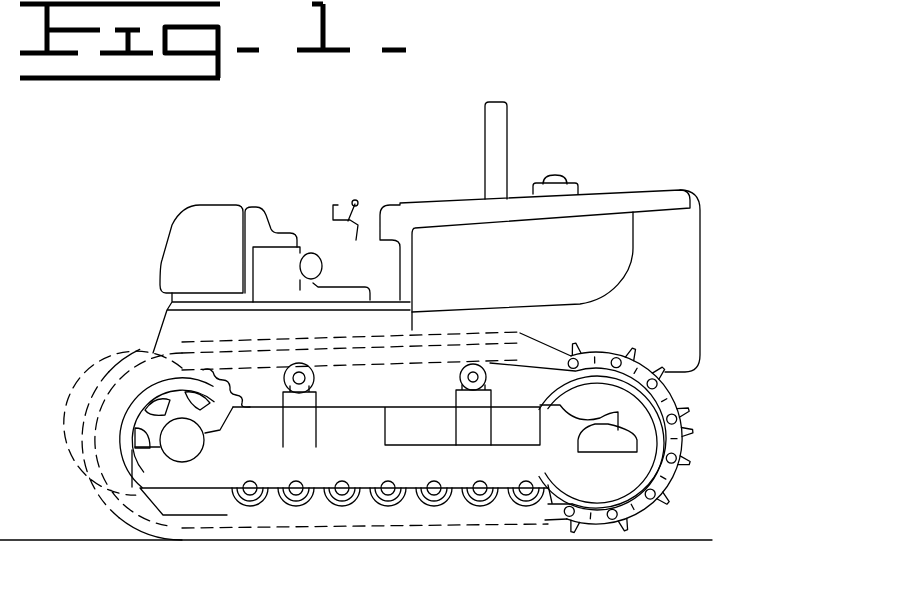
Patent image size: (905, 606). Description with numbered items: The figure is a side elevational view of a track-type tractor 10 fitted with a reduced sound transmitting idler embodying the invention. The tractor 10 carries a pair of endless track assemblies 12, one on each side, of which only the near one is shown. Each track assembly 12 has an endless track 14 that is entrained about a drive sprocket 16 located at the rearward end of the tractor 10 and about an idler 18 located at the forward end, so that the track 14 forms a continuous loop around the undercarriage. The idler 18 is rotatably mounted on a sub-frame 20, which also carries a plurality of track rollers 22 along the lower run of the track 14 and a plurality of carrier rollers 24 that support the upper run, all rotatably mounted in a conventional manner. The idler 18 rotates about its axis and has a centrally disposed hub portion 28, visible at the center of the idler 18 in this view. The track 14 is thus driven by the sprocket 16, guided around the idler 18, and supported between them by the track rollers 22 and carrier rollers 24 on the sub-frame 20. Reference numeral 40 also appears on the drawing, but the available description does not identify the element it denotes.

The track-type tractor 10 is at (647, 121).
The endless track assembly 12 is at (408, 442).
The endless track 14 is at (682, 496).
The drive sprocket 16 is at (112, 374).
The idler 18 is at (638, 414).
The sub-frame 20 is at (334, 476).
The track rollers 22 is at (395, 507).
The carrier rollers 24 is at (430, 375).
The hub portion 28 is at (608, 398).
The track chain 40 is at (547, 400).